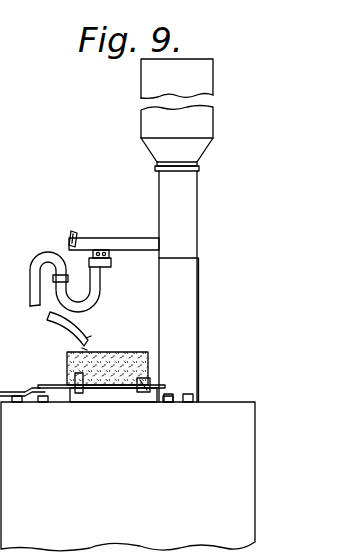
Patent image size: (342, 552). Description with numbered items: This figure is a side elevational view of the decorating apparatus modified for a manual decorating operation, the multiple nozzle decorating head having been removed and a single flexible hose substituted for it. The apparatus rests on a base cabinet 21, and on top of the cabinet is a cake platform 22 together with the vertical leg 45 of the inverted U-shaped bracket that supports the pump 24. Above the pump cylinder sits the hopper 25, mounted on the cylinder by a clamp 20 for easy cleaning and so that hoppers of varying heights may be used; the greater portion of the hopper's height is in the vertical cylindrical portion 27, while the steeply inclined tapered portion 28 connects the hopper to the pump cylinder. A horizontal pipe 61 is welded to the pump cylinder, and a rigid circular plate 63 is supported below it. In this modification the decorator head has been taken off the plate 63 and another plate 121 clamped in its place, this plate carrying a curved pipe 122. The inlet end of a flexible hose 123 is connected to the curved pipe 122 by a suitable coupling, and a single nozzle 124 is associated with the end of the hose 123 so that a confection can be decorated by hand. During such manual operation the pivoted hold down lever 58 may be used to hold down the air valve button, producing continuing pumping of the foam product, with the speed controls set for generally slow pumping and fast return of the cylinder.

The vertical cylindrical portion 27 is at (141, 88).
The hopper 25 is at (214, 130).
The tapered portion 28 is at (151, 148).
The clamp 20 is at (199, 168).
The pump 24 is at (198, 203).
The vertical leg 45 is at (183, 301).
The horizontal pipe 61 is at (120, 238).
The rigid circular plate 63 is at (113, 260).
The plate 121 is at (110, 270).
The curved pipe 122 is at (94, 311).
The flexible hose 123 is at (40, 262).
The nozzle 124 is at (94, 342).
The cake platform 22 is at (50, 385).
The hold down lever 58 is at (10, 392).
The base cabinet 21 is at (222, 402).